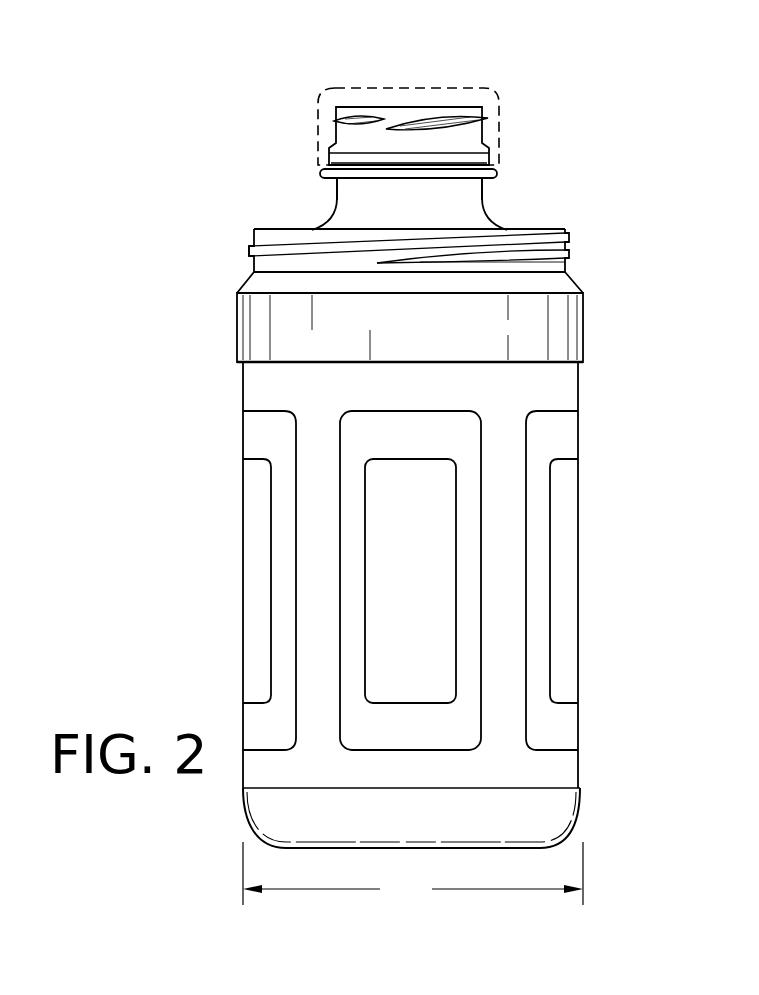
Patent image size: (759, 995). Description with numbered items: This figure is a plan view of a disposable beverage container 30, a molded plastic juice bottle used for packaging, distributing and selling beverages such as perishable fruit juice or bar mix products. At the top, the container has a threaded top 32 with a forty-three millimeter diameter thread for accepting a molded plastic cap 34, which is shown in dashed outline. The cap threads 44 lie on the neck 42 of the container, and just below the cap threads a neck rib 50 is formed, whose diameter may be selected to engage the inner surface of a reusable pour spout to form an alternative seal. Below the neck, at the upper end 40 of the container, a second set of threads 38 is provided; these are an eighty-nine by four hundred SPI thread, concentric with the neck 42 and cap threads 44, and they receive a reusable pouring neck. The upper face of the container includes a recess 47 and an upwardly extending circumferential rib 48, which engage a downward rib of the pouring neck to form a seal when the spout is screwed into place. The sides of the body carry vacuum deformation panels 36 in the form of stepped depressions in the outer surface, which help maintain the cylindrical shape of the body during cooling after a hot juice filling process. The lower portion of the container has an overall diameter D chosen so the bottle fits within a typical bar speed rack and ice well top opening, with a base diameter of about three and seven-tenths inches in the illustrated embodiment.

The container 30 is at (634, 316).
The threaded top 32 is at (408, 107).
The cap 34 is at (500, 115).
The vacuum deformation panels 36 is at (340, 497).
The second set of threads 38 is at (256, 246).
The upper end 40 is at (175, 155).
The neck 42 is at (478, 200).
The cap threads 44 is at (337, 120).
The recess 47 is at (277, 205).
The circumferential rib 48 is at (557, 228).
The neck rib 50 is at (497, 175).